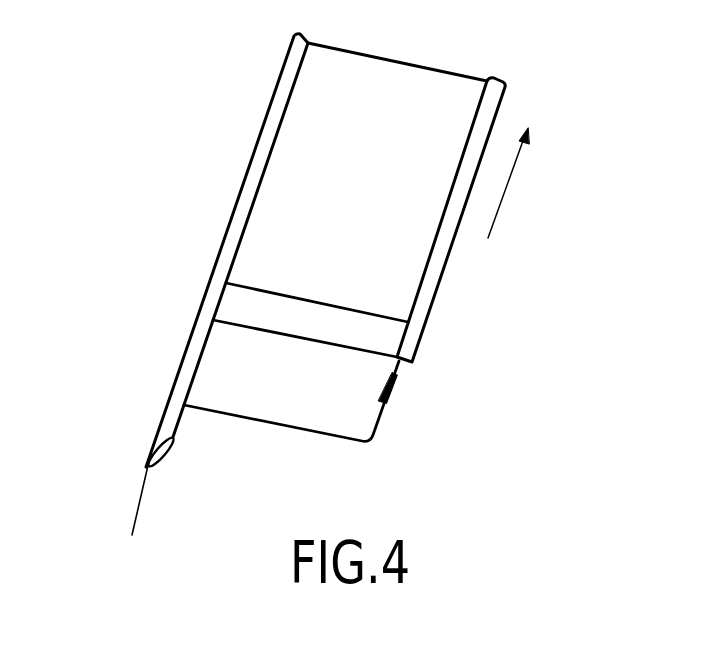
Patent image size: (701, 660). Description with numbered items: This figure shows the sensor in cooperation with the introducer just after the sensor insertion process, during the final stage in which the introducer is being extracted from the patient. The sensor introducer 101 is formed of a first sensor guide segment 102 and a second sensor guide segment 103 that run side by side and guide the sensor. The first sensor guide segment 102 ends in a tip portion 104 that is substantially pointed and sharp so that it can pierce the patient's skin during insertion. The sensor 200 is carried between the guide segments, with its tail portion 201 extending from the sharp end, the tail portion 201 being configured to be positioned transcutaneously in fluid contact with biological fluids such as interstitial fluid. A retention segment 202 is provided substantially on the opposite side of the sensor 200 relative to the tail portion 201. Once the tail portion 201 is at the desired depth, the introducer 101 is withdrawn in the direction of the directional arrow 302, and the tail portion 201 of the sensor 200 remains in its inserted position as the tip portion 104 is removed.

The sensor introducer 101 is at (403, 75).
The first sensor guide segment 102 is at (218, 280).
The second sensor guide segment 103 is at (435, 265).
The tip portion 104 is at (157, 438).
The sensor 200 is at (280, 412).
The tail portion 201 is at (138, 503).
The retention segment 202 is at (398, 383).
The directional arrow 302 is at (508, 188).